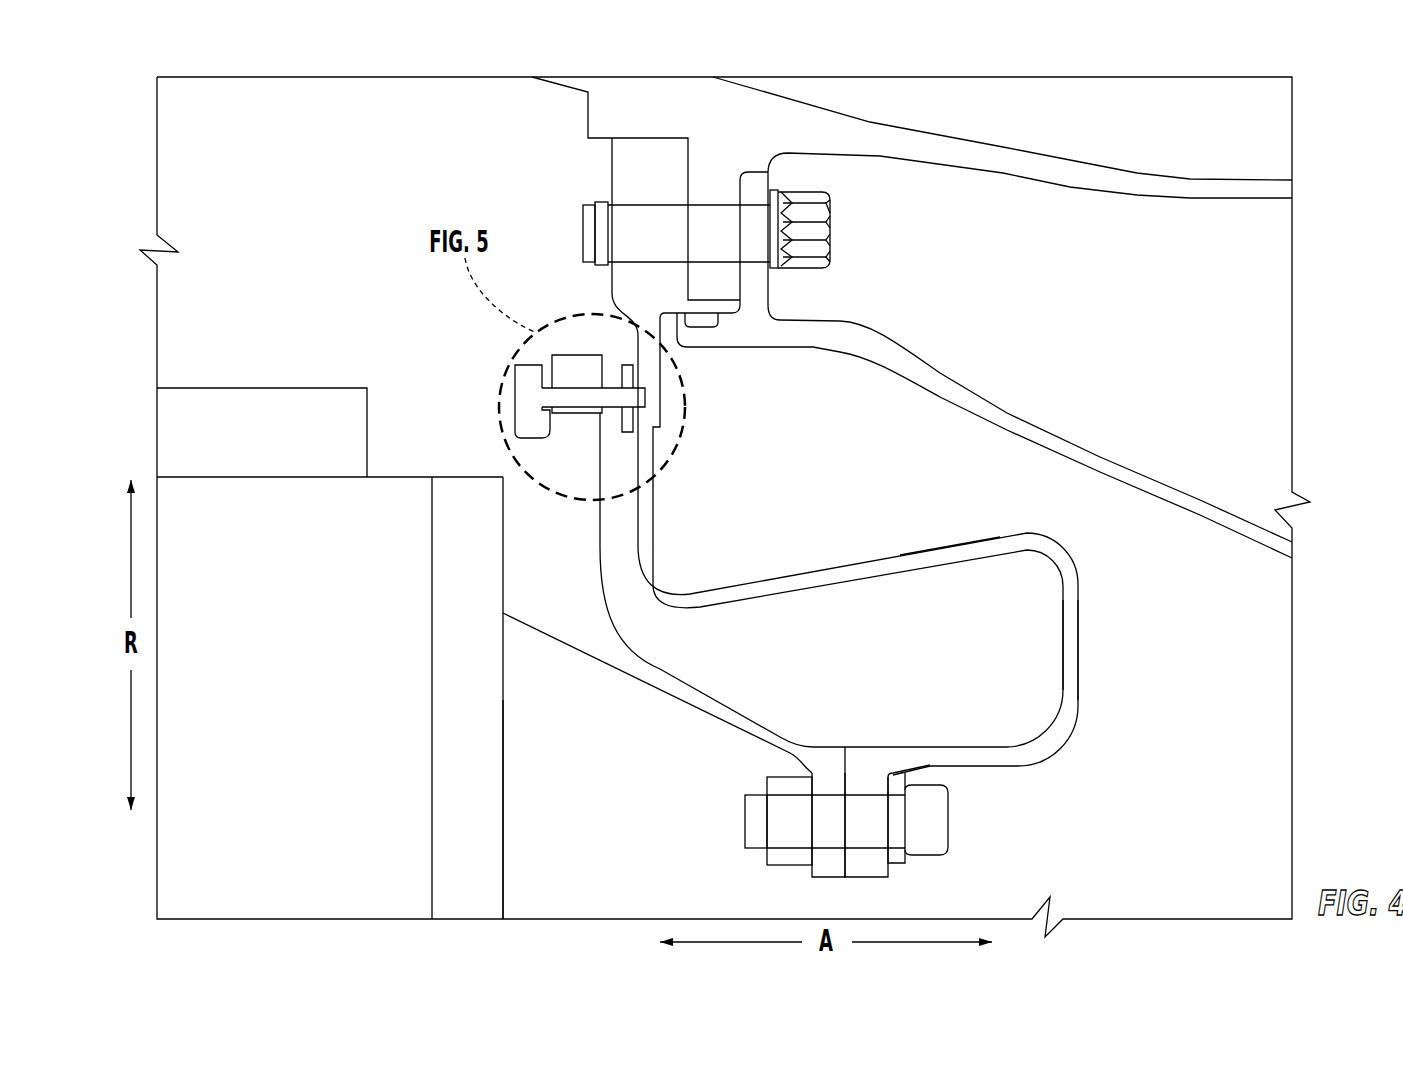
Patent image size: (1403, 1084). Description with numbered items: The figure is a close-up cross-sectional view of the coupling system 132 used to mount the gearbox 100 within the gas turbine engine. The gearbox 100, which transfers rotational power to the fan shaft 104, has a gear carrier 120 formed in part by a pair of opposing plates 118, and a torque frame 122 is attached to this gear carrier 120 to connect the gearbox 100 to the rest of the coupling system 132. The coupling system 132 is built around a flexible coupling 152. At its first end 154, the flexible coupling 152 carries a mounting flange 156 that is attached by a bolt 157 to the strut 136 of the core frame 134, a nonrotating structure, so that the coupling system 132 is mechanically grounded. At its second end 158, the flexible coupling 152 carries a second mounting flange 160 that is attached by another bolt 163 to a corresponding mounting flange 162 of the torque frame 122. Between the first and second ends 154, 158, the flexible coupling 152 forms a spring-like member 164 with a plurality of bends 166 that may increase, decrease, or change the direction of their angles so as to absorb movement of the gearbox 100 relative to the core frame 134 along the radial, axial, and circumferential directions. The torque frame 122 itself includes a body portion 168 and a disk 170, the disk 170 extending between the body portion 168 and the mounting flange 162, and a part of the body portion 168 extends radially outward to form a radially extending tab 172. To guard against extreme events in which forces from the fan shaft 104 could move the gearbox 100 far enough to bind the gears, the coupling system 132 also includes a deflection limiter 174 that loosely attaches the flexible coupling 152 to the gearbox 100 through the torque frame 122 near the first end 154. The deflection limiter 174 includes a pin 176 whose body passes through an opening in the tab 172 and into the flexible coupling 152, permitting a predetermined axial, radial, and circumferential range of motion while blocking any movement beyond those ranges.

The gearbox 100 is at (200, 503).
The fan shaft 104 is at (226, 408).
The plates 118 is at (475, 878).
The gear carrier 120 is at (533, 858).
The torque frame 122 is at (590, 658).
The coupling system 132 is at (1033, 812).
The core frame 134 is at (943, 123).
The strut 136 is at (1117, 467).
The flexible coupling 152 is at (1100, 530).
The first end 154 is at (588, 278).
The mounting flange 156 is at (647, 177).
The bolt 157 is at (723, 238).
The second end 158 is at (893, 737).
The second mounting flange 160 is at (870, 862).
The mounting flange 162 is at (823, 865).
The bolt 163 is at (772, 827).
The spring-like member 164 is at (975, 527).
The bends 166 is at (1040, 712).
The body portion 168 is at (513, 535).
The disk 170 is at (687, 707).
The radially extending tab 172 is at (567, 365).
The deflection limiter 174 is at (510, 365).
The pin 176 is at (517, 417).